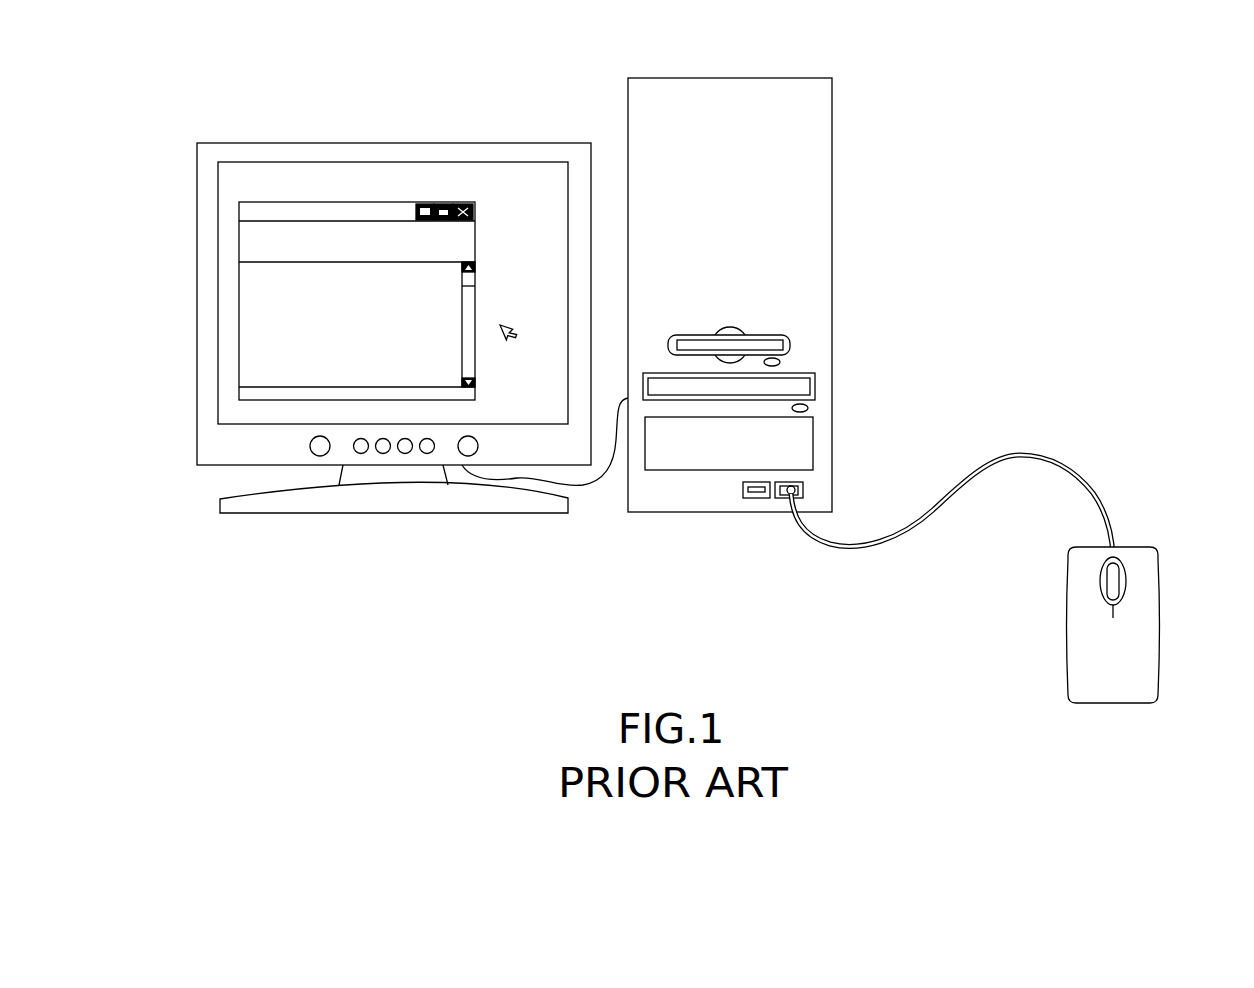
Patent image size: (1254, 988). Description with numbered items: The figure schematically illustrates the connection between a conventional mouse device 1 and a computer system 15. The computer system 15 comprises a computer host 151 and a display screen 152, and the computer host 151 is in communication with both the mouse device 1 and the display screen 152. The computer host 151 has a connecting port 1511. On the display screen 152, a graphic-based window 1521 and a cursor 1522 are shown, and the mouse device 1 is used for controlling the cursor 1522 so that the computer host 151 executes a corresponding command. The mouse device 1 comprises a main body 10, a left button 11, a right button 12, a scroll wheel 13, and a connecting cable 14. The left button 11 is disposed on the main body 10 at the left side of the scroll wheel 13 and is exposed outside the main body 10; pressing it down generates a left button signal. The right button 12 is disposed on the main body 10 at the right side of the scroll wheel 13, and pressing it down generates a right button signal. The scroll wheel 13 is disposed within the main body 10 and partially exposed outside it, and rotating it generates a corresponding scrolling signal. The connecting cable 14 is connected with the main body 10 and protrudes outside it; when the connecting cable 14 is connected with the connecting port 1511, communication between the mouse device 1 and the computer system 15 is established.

The mouse device 1 is at (1114, 597).
The main body 10 is at (1085, 662).
The left button 11 is at (1079, 589).
The right button 12 is at (1145, 588).
The scroll wheel 13 is at (1117, 560).
The connecting cable 14 is at (1027, 451).
The computer system 15 is at (730, 298).
The computer host 151 is at (742, 96).
The connecting port 1511 is at (747, 498).
The display screen 152 is at (491, 149).
The graphic-based window 1521 is at (315, 242).
The cursor 1522 is at (517, 340).